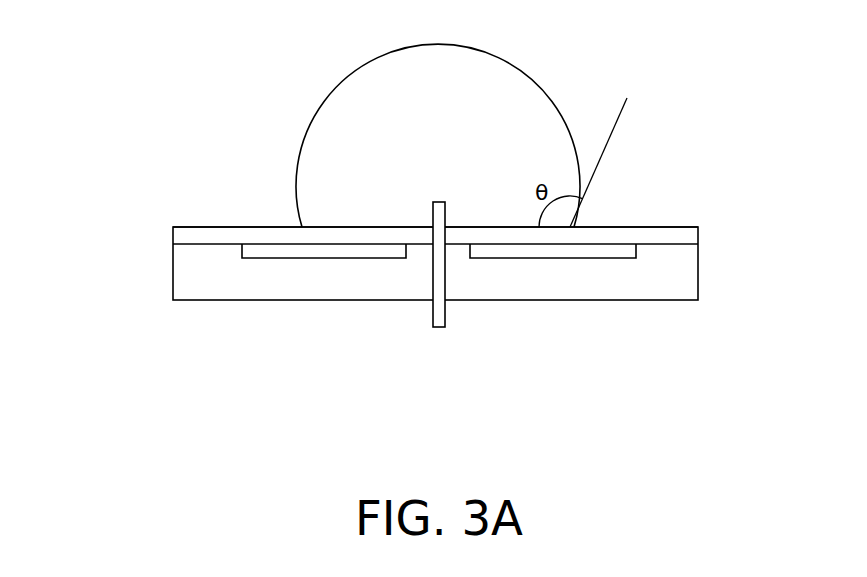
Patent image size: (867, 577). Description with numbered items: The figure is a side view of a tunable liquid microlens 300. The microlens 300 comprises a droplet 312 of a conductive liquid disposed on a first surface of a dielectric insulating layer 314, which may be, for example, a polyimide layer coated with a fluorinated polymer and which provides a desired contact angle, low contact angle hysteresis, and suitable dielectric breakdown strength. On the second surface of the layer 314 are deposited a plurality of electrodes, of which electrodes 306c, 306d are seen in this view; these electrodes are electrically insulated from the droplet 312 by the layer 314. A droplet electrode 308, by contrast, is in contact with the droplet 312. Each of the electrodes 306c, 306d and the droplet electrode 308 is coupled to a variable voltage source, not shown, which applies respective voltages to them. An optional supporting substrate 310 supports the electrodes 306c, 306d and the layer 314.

The tunable liquid microlens 300 is at (258, 103).
The droplet 312 is at (522, 97).
The supporting substrate 310 is at (192, 268).
The dielectric insulating layer 314 is at (183, 238).
The electrode 306c is at (350, 252).
The electrode 306d is at (538, 252).
The droplet electrode 308 is at (445, 305).